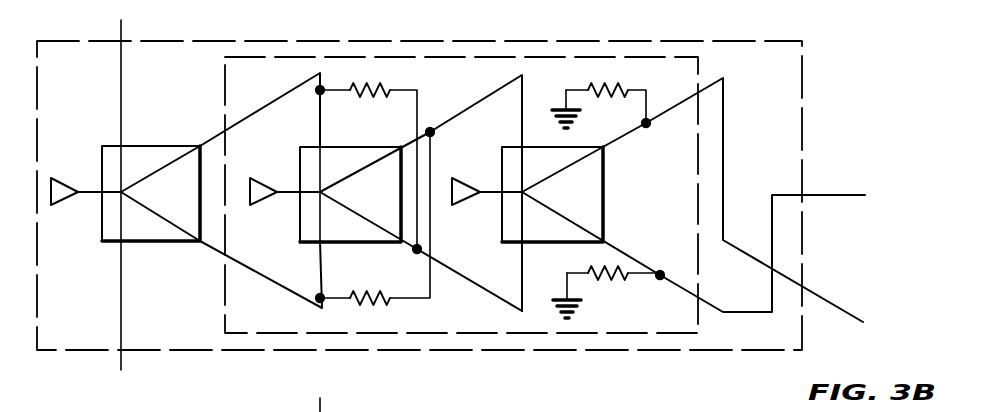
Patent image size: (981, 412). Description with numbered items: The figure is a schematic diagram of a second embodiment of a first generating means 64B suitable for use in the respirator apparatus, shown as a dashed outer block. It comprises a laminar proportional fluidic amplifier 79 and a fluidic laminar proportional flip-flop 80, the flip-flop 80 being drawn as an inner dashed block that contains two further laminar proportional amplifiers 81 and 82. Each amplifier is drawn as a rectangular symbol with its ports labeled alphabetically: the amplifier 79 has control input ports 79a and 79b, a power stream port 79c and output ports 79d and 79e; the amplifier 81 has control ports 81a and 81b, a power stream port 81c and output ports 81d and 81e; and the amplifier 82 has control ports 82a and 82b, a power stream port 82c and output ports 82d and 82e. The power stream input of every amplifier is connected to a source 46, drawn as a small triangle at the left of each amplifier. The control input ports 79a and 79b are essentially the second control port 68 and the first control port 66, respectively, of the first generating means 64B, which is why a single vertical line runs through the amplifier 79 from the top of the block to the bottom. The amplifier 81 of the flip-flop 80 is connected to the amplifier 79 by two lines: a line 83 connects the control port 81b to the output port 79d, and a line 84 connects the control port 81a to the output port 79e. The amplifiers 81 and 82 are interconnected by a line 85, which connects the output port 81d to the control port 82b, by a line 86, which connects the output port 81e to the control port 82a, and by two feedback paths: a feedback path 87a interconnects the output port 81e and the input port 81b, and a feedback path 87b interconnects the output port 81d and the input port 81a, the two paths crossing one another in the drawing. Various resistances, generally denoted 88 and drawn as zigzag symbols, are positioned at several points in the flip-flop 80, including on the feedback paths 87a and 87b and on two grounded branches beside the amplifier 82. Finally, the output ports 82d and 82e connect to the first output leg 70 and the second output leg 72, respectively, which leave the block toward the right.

The source 46 is at (57, 180).
The first generating means 64B is at (78, 351).
The first control port 66 is at (122, 41).
The second control port 68 is at (123, 352).
The first output port or leg 70 is at (842, 307).
The second output port or leg 72 is at (840, 200).
The laminar proportional fluidic amplifier 79 is at (108, 246).
The control input port 79a is at (125, 230).
The control input port 79b is at (125, 158).
The power stream port 79c is at (110, 193).
The output port 79d is at (178, 158).
The output port 79e is at (183, 232).
The fluidic laminar proportional flip-flop 80 is at (592, 334).
The laminar proportional amplifier 81 is at (305, 244).
The control port 81a is at (325, 232).
The control port 81b is at (322, 157).
The power stream port 81c is at (312, 195).
The output port 81d is at (378, 158).
The output port 81e is at (380, 232).
The laminar proportional amplifier 82 is at (548, 243).
The control port 82a is at (520, 235).
The control port 82b is at (522, 157).
The power stream port 82c is at (514, 195).
The output port 82d is at (580, 158).
The output port 82e is at (612, 233).
The line 83 is at (280, 98).
The line 84 is at (272, 283).
The line 85 is at (478, 98).
The line 86 is at (447, 266).
The feedback path 87a is at (326, 90).
The feedback path 87b is at (330, 302).
The resistance 88 is at (385, 92).